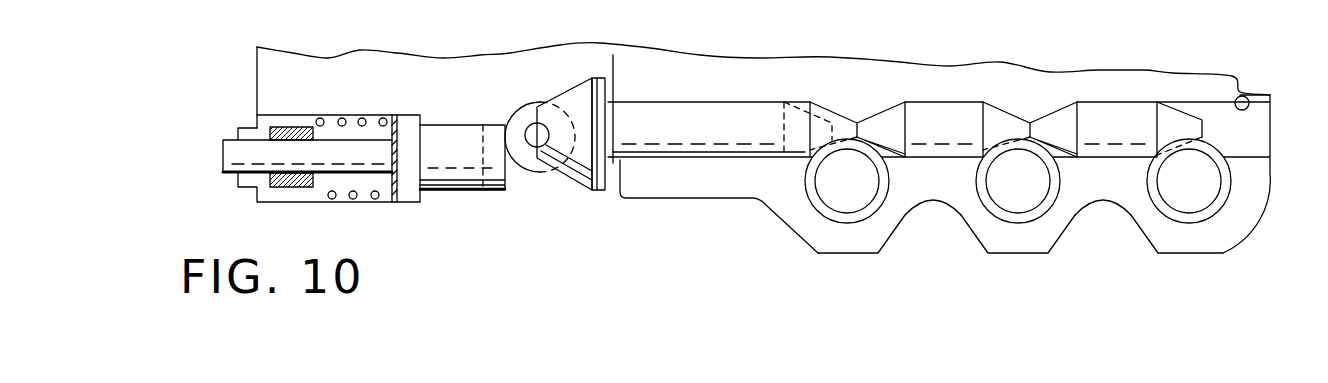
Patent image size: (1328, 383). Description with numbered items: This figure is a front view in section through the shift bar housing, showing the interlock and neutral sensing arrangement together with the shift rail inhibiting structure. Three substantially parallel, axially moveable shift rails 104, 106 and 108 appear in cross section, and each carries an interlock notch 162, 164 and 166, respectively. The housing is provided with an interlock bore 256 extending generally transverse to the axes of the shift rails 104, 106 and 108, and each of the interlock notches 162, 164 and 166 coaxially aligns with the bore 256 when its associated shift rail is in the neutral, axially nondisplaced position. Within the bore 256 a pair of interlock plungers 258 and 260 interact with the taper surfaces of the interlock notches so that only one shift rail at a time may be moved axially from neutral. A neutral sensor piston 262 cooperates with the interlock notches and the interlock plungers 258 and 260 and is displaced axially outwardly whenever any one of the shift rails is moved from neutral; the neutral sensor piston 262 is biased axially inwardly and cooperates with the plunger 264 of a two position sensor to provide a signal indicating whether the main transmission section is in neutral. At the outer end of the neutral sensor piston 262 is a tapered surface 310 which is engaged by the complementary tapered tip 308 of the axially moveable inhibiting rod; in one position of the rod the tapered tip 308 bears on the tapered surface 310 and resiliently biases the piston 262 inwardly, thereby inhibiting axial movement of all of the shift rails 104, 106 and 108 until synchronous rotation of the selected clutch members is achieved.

The interlock bore 256 is at (1247, 102).
The interlock plunger 258 is at (1115, 115).
The interlock plunger 260 is at (950, 122).
The neutral sensor piston 262 is at (723, 122).
The plunger of two position sensor 264 is at (362, 152).
The tapered tip 308 is at (517, 147).
The tapered surface 310 is at (580, 90).
The interlock notch 162 is at (820, 210).
The interlock notch 164 is at (1000, 215).
The interlock notch 166 is at (1173, 212).
The shift rail 104 is at (853, 197).
The shift rail 106 is at (1027, 193).
The shift rail 108 is at (1200, 192).